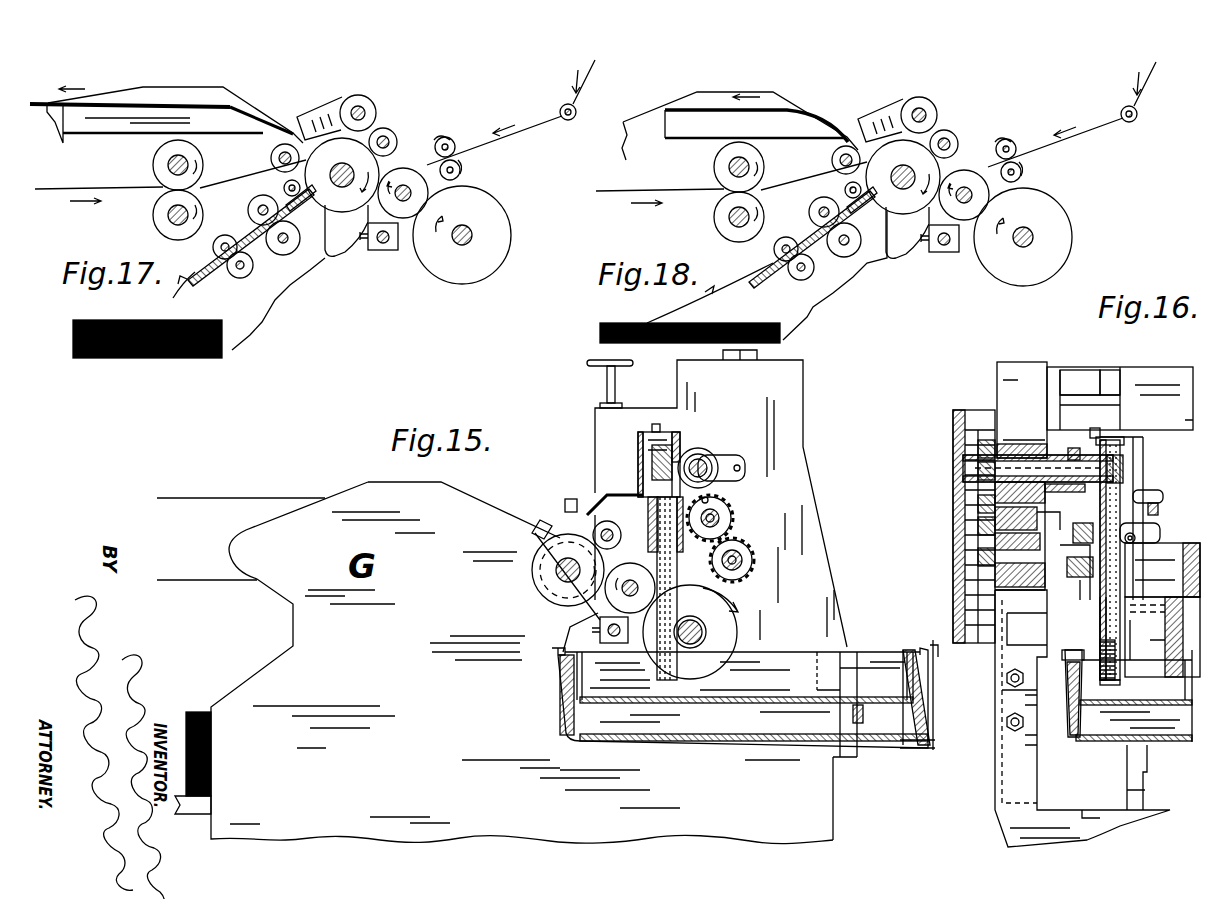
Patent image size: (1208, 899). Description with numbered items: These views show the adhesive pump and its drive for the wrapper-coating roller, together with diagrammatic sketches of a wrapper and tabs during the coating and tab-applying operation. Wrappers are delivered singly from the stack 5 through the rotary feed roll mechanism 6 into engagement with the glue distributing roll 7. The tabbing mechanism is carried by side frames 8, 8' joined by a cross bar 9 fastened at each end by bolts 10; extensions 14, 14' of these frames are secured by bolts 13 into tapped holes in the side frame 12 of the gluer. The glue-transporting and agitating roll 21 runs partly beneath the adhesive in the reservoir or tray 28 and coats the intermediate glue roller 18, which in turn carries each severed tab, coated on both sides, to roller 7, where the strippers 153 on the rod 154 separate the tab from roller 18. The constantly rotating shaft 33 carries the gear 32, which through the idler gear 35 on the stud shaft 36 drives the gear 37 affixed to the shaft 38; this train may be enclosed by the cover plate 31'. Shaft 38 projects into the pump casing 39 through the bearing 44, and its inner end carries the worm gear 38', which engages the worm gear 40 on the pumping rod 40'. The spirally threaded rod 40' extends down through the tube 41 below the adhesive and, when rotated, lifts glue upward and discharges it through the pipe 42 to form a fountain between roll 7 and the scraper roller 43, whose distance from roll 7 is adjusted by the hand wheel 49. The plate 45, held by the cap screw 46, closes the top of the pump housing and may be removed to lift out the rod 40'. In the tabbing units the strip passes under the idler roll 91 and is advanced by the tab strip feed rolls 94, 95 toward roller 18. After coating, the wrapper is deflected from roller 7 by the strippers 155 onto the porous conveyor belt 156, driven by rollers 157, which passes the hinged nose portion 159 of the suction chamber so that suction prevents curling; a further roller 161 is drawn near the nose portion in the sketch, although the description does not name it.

In FIG. 17, the stack of unglued wrappers 5 is at (73, 328).
In FIG. 18, the stack of unglued wrappers 5 is at (600, 330).
In FIG. 15, the stack of unglued wrappers 5 is at (193, 712).
In FIG. 17, the rotary feed roll mechanism 6 is at (252, 264).
In FIG. 18, the rotary feed roll mechanism 6 is at (811, 266).
In FIG. 17, the glue distributing roll 7 is at (352, 150).
In FIG. 18, the glue distributing roll 7 is at (913, 152).
In FIG. 15, the glue distributing roll 7 is at (545, 585).
In FIG. 16, the glue distributing roll 7 is at (1093, 606).
In FIG. 16, the side frame 8 is at (1008, 395).
In FIG. 15, the side frame 8' is at (724, 498).
In FIG. 16, the cross bar 9 is at (1130, 377).
In FIG. 16, the bolts 10 is at (1060, 385).
In FIG. 15, the side frame of the automatic gluer 12 is at (835, 824).
In FIG. 16, the side frame of the automatic gluer 12 is at (1008, 775).
In FIG. 15, the bolts 13 is at (865, 713).
In FIG. 16, the bolts 13 is at (1005, 720).
In FIG. 16, the extension 14 is at (995, 723).
In FIG. 15, the extension 14' is at (861, 719).
In FIG. 17, the intermediate glue roller 18 is at (411, 207).
In FIG. 18, the intermediate glue roller 18 is at (972, 209).
In FIG. 15, the intermediate glue roller 18 is at (626, 575).
In FIG. 16, the intermediate glue roller 18 is at (1175, 616).
In FIG. 17, the glue-transporting and agitating roll 21 is at (498, 251).
In FIG. 18, the glue-transporting and agitating roll 21 is at (1059, 253).
In FIG. 15, the glue-transporting and agitating roll 21 is at (732, 630).
In FIG. 16, the glue-transporting and agitating roll 21 is at (1150, 650).
In FIG. 15, the reservoir or tray 28 is at (798, 705).
In FIG. 16, the reservoir or tray 28 is at (1090, 705).
In FIG. 16, the removable housing or cover plate 31' is at (936, 695).
In FIG. 15, the gear 32 is at (755, 560).
In FIG. 16, the gear 32 is at (975, 555).
In FIG. 15, the shaft 33 is at (752, 572).
In FIG. 16, the shaft 33 is at (1062, 558).
In FIG. 15, the idler gear 35 is at (733, 516).
In FIG. 16, the idler gear 35 is at (980, 515).
In FIG. 15, the stud shaft 36 is at (735, 524).
In FIG. 16, the stud shaft 36 is at (968, 505).
In FIG. 15, the gear 37 is at (712, 508).
In FIG. 16, the gear 37 is at (968, 470).
In FIG. 16, the shaft 38 is at (950, 526).
In FIG. 15, the worm gear 38' is at (720, 452).
In FIG. 16, the worm gear 38' is at (1149, 458).
In FIG. 15, the pump casing 39 is at (645, 470).
In FIG. 16, the pump casing 39 is at (1067, 455).
In FIG. 15, the worm gear 40 is at (615, 496).
In FIG. 16, the worm gear 40 is at (1141, 558).
In FIG. 15, the pumping rod 40' is at (685, 588).
In FIG. 16, the pumping rod 40' is at (1081, 681).
In FIG. 15, the tube or conduit 41 is at (678, 600).
In FIG. 16, the tube or conduit 41 is at (1110, 606).
In FIG. 15, the pipe 42 is at (587, 510).
In FIG. 16, the pipe 42 is at (1163, 496).
In FIG. 17, the roller 43 is at (395, 138).
In FIG. 18, the roller 43 is at (956, 140).
In FIG. 15, the roller 43 is at (597, 530).
In FIG. 16, the roller 43 is at (1160, 530).
In FIG. 16, the bearing 44 is at (1075, 456).
In FIG. 15, the plate 45 is at (640, 432).
In FIG. 16, the plate 45 is at (1137, 437).
In FIG. 15, the cap screw 46 is at (652, 428).
In FIG. 16, the cap screw 46 is at (1095, 430).
In FIG. 15, the hand wheel 49 is at (587, 363).
In FIG. 17, the idler roll 91 is at (568, 121).
In FIG. 18, the idler roll 91 is at (1129, 123).
In FIG. 17, the tab strip feed roll 94 is at (455, 140).
In FIG. 18, the tab strip feed roll 94 is at (1016, 142).
In FIG. 17, the tab strip feed roll 95 is at (462, 172).
In FIG. 18, the tab strip feed roll 95 is at (1023, 174).
In FIG. 17, the strippers 153 is at (338, 262).
In FIG. 18, the strippers 153 is at (928, 224).
In FIG. 17, the rod 154 is at (381, 250).
In FIG. 18, the rod 154 is at (940, 255).
In FIG. 17, the strippers 155 is at (322, 108).
In FIG. 18, the strippers 155 is at (883, 110).
In FIG. 17, the conveyor belt 156 is at (63, 191).
In FIG. 18, the conveyor belt 156 is at (624, 193).
In FIG. 15, the conveyor belt 156 is at (197, 499).
In FIG. 17, the rollers 157 is at (165, 178).
In FIG. 18, the rollers 157 is at (726, 180).
In FIG. 17, the hinged nose portion 159 is at (113, 125).
In FIG. 18, the hinged nose portion 159 is at (688, 125).
In FIG. 17, the roller 161 is at (271, 155).